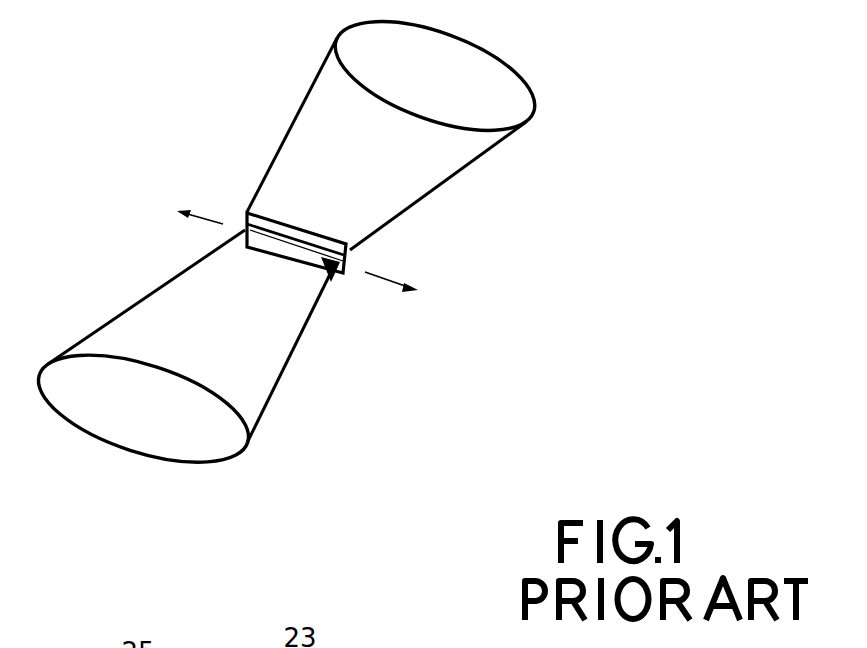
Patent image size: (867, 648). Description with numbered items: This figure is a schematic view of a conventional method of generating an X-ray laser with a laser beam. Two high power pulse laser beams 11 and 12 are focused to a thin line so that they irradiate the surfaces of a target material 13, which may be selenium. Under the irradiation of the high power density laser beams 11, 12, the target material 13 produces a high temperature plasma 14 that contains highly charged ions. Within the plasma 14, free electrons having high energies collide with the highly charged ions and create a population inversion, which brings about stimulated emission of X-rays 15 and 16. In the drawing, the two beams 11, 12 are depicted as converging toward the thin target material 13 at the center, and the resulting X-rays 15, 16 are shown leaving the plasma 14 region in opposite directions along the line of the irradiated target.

The high power pulse laser beam 11 is at (415, 180).
The high power pulse laser beam 12 is at (265, 365).
The target material 13 is at (287, 220).
The high temperature plasma 14 is at (327, 283).
The X-rays 15 is at (178, 204).
The X-rays 16 is at (410, 289).